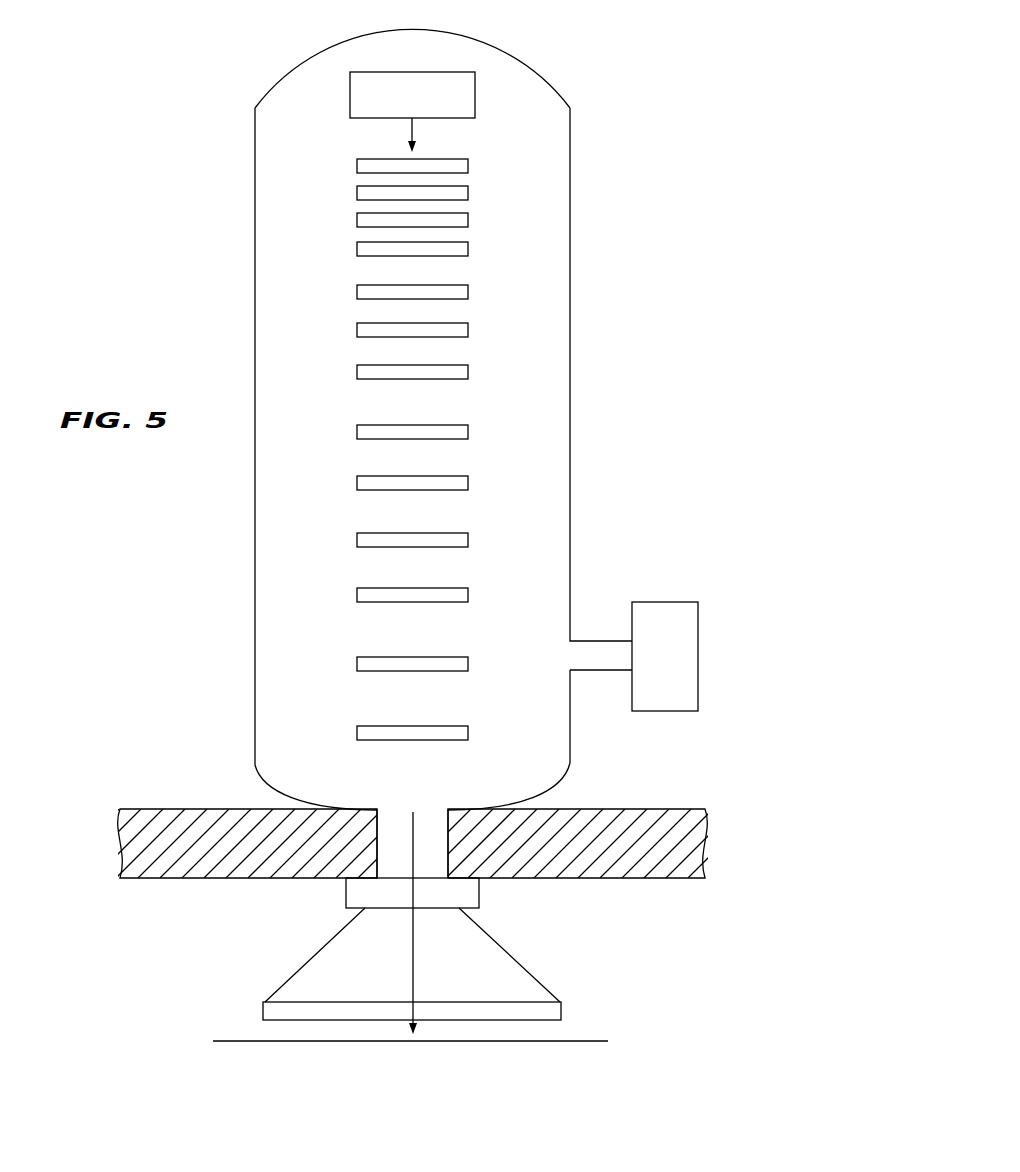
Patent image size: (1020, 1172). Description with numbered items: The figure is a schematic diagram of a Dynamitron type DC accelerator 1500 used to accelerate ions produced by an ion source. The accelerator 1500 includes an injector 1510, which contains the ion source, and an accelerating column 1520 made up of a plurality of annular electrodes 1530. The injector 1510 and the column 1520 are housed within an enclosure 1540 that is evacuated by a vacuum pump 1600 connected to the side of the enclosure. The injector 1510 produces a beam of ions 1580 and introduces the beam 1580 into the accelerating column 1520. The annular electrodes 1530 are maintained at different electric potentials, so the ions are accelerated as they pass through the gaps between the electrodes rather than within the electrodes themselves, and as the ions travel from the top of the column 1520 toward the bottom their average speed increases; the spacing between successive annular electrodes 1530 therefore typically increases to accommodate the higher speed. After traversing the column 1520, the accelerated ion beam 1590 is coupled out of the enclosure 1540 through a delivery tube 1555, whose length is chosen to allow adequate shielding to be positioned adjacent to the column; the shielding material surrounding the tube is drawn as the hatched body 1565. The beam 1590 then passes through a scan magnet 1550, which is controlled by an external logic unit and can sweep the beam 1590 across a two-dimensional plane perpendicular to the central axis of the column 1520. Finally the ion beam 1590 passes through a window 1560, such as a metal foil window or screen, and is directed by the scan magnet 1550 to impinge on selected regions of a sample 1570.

The accelerator 1500 is at (189, 163).
The injector 1510 is at (438, 106).
The accelerating column 1520 is at (480, 135).
The annular electrodes 1530 is at (357, 248).
The enclosure 1540 is at (570, 315).
The scan magnet 1550 is at (479, 890).
The delivery tube 1555 is at (378, 832).
The window 1560 is at (561, 1010).
The chamber wall plate 1565 is at (637, 809).
The sample 1570 is at (605, 1041).
The beam of ions 1580 is at (407, 134).
The accelerated ion beam 1590 is at (408, 985).
The vacuum pump 1600 is at (690, 664).